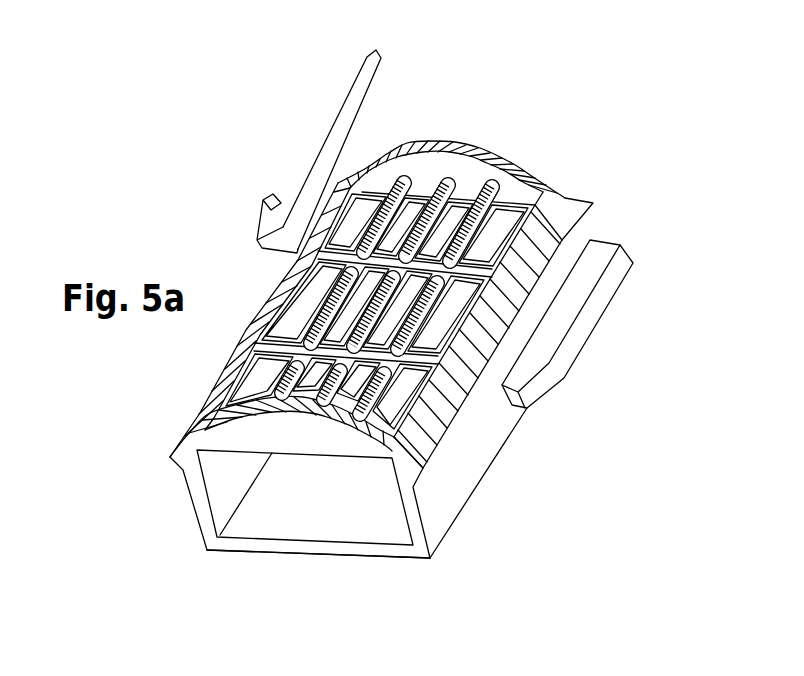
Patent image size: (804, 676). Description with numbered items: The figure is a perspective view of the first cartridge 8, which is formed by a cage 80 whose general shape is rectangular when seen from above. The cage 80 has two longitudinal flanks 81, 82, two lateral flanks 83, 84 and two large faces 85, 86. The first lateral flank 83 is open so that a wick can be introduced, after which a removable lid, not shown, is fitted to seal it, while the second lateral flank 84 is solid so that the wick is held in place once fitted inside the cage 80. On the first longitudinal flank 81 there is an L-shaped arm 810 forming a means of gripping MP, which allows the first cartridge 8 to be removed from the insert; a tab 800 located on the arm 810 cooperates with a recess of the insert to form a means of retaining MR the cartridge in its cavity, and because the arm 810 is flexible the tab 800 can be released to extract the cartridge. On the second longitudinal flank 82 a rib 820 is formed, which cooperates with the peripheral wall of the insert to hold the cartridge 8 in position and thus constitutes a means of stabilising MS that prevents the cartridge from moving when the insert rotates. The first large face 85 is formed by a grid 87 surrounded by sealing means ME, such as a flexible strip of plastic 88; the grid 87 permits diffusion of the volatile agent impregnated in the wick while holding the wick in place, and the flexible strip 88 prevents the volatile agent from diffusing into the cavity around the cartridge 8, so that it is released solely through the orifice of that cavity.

The first cartridge 8 is at (393, 580).
The cage 80 is at (460, 520).
The first longitudinal flank 81 is at (228, 489).
The second longitudinal flank 82 is at (477, 460).
The first lateral flank 83 is at (332, 547).
The second lateral flank 84 is at (537, 154).
The first large face 85 is at (560, 207).
The second large face 86 is at (280, 518).
The grid 87 is at (480, 192).
The flexible strip of plastic 88 is at (417, 143).
The tab 800 is at (273, 197).
The arm 810 is at (330, 121).
The rib 820 is at (577, 330).
The means of gripping MP is at (300, 145).
The means of retaining MR is at (246, 220).
The sealing means ME is at (549, 236).
The means of stabilising MS is at (625, 292).